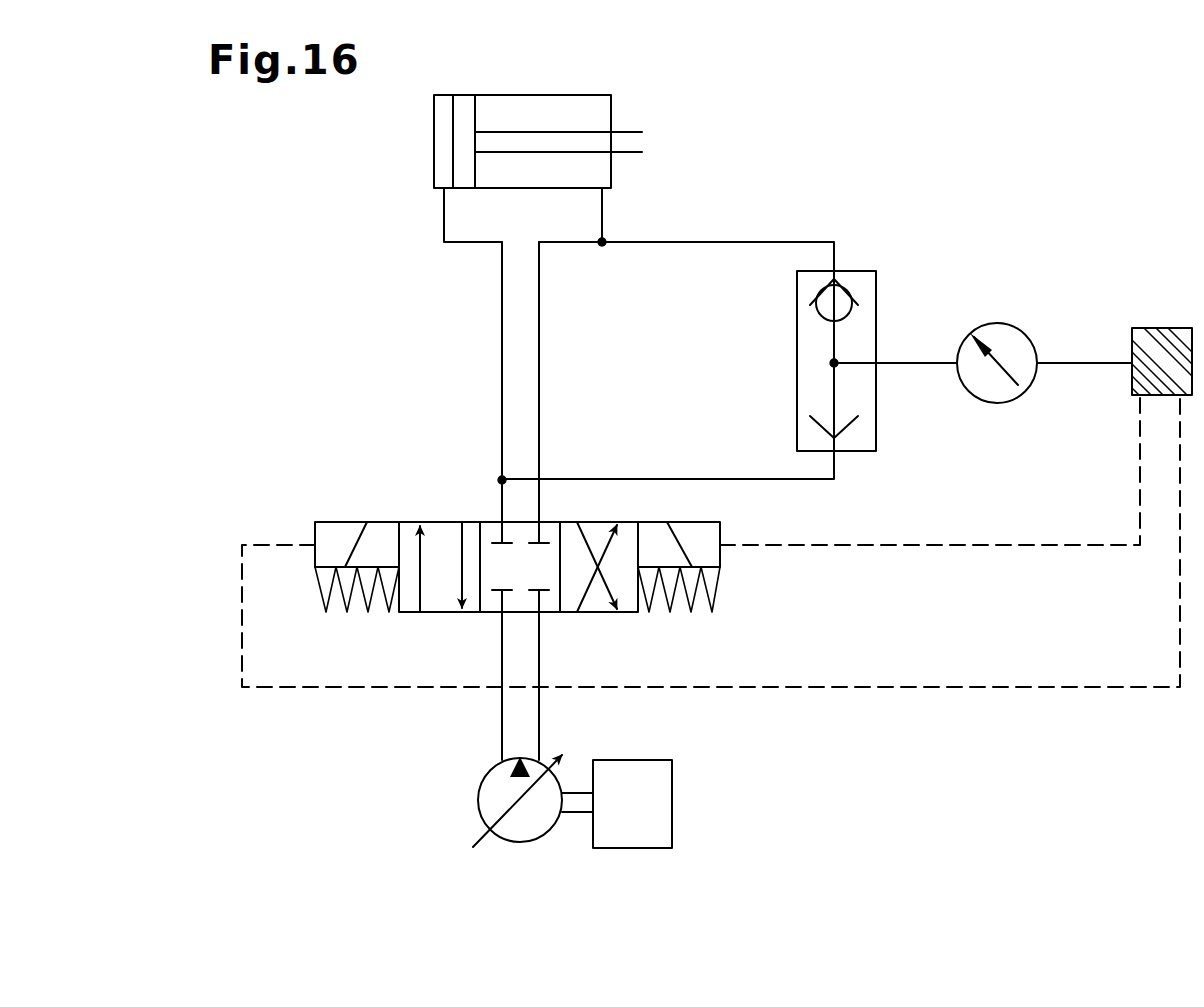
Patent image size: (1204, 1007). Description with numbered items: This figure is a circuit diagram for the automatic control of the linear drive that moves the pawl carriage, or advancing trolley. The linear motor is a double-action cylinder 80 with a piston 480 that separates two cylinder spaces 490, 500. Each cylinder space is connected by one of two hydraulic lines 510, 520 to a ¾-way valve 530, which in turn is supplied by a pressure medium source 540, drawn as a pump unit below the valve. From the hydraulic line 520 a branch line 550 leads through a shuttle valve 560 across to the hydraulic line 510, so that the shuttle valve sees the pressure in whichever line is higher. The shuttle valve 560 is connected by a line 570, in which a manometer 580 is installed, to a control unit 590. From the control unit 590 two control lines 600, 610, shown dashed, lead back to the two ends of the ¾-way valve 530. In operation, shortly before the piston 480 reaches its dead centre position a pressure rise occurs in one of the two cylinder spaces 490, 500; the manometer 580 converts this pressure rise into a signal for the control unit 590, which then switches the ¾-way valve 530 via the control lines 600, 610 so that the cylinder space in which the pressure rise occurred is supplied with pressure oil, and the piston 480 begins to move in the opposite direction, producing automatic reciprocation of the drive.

The double-action cylinder 80 is at (625, 89).
The piston 480 is at (462, 125).
The cylinder space 490 is at (440, 167).
The cylinder space 500 is at (587, 168).
The hydraulic line 510 is at (501, 337).
The hydraulic line 520 is at (540, 320).
The ¾-way valve 530 is at (412, 505).
The pressure medium source 540 is at (580, 815).
The branch line 550 is at (738, 241).
The shuttle valve 560 is at (852, 275).
The line 570 is at (918, 365).
The manometer 580 is at (1007, 333).
The control unit 590 is at (1165, 333).
The control line 600 is at (1005, 543).
The control line 610 is at (1022, 689).